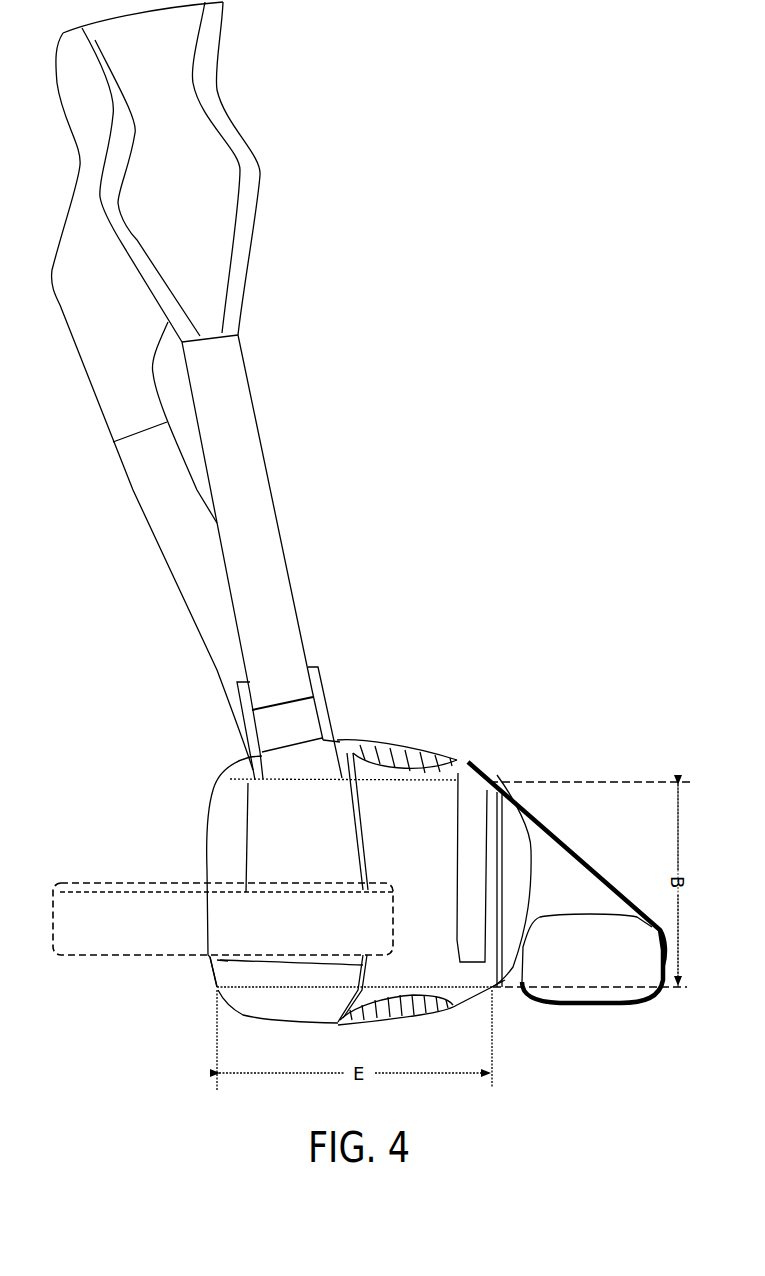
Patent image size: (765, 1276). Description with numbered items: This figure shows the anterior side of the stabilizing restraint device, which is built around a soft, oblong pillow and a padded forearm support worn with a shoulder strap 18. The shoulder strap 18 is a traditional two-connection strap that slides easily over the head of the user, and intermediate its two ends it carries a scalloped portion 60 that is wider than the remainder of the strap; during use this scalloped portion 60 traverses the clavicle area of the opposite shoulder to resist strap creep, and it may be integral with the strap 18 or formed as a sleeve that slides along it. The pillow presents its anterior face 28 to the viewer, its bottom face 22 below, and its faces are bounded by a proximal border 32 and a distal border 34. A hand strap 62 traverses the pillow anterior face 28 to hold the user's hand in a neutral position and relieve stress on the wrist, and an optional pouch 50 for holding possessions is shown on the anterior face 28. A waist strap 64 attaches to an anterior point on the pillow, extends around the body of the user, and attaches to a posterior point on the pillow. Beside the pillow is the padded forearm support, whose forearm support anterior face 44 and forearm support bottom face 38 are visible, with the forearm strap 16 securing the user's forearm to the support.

The scalloped portion 60 is at (248, 77).
The shoulder strap 18 is at (267, 468).
The proximal border 32 is at (227, 775).
The pouch 50 is at (320, 873).
The hand strap 62 is at (424, 874).
The forearm strap 16 is at (580, 850).
The forearm support anterior face 44 is at (610, 964).
The forearm support bottom face 38 is at (555, 1007).
The waist strap 64 is at (208, 936).
The anterior face 28 is at (225, 960).
The distal border 34 is at (218, 990).
The bottom face 22 is at (265, 1010).